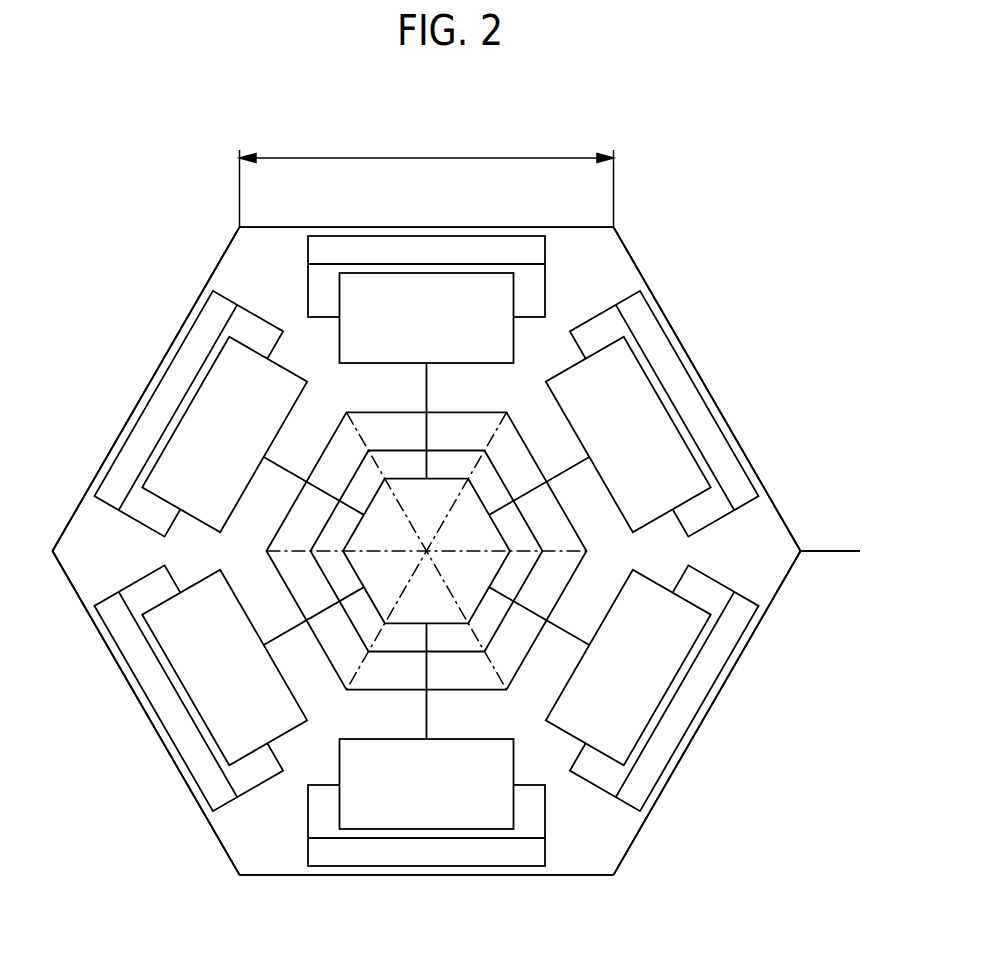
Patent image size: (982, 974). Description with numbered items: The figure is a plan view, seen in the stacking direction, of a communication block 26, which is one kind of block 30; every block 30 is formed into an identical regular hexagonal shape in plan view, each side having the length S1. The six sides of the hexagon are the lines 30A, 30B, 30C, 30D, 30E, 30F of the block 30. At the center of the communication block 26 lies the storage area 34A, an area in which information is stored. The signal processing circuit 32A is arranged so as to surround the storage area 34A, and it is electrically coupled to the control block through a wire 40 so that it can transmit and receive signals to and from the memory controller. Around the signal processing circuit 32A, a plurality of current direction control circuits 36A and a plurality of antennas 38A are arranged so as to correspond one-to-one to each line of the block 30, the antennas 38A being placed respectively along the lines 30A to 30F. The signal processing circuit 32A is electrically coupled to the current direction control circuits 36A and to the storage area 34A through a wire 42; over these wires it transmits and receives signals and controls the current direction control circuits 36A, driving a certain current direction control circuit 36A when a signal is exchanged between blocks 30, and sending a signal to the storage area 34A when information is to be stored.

The communication block 26 is at (683, 148).
The block 30 is at (216, 858).
The line of the block 30A is at (292, 227).
The line of the block 30B is at (640, 273).
The line of the block 30C is at (752, 632).
The line of the block 30D is at (562, 875).
The line of the block 30E is at (192, 805).
The line of the block 30F is at (118, 435).
The signal processing circuit 32A is at (270, 567).
The storage area 34A is at (503, 530).
The current direction control circuit 36A is at (290, 371).
The antenna 38A is at (215, 291).
The wire 40 is at (828, 554).
The wire 42 is at (427, 392).
The length of one line S1 is at (427, 177).